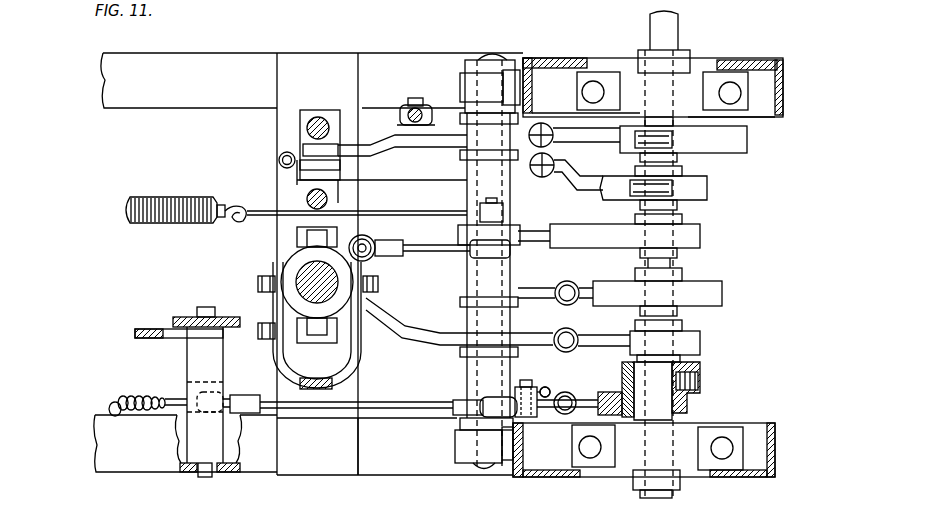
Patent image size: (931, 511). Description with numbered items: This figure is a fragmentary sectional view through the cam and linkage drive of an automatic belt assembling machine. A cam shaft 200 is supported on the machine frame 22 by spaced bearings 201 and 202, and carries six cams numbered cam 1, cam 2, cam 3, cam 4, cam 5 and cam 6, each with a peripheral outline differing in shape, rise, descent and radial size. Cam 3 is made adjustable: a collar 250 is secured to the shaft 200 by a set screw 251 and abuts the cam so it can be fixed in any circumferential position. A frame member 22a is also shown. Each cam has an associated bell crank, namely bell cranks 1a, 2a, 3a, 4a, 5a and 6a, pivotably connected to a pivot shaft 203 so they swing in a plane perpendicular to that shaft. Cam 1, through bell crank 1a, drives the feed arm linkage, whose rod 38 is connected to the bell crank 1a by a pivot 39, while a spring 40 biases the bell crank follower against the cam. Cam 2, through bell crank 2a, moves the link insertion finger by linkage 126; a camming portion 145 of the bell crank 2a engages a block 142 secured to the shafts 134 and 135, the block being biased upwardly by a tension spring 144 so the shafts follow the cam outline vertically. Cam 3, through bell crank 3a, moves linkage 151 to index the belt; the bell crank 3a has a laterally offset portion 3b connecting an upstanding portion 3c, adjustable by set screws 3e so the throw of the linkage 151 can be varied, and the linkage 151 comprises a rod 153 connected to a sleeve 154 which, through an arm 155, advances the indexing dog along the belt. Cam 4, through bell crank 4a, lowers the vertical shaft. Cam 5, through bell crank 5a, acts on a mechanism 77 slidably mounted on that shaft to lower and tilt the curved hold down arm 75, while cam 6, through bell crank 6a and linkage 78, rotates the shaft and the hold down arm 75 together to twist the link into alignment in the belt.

The cam 1 is at (748, 140).
The bell crank 1a is at (565, 137).
The cam 2 is at (707, 190).
The bell crank 2a is at (578, 182).
The cam 3 is at (605, 392).
The bell crank 3a is at (578, 396).
The laterally offset portion 3b is at (538, 390).
The upstanding portion 3c is at (470, 386).
The set screws 3e is at (546, 398).
The cam 4 is at (700, 347).
The bell crank 4a is at (586, 340).
The cam 5 is at (722, 295).
The bell crank 5a is at (550, 290).
The cam 6 is at (700, 240).
The bell crank 6a is at (542, 232).
The frame 22 is at (566, 58).
The frame member 22a is at (347, 453).
The rod 38 is at (432, 105).
The pivot 39 is at (418, 98).
The spring 40 is at (410, 110).
The hold down arm 75 is at (361, 358).
The mechanism 77 is at (280, 265).
The linkage 78 is at (432, 248).
The linkage 126 is at (298, 197).
The shaft 134 is at (318, 117).
The shaft 135 is at (327, 197).
The block 142 is at (300, 135).
The tension spring 144 is at (279, 162).
The camming portion 145 is at (355, 150).
The linkage 151 is at (388, 410).
The rod 153 is at (320, 410).
The sleeve 154 is at (223, 370).
The arm 155 is at (163, 340).
The cam shaft 200 is at (680, 30).
The bearing 201 is at (637, 62).
The bearing 202 is at (622, 465).
The pivot shaft 203 is at (490, 53).
The collar 250 is at (702, 395).
The set screw 251 is at (700, 380).